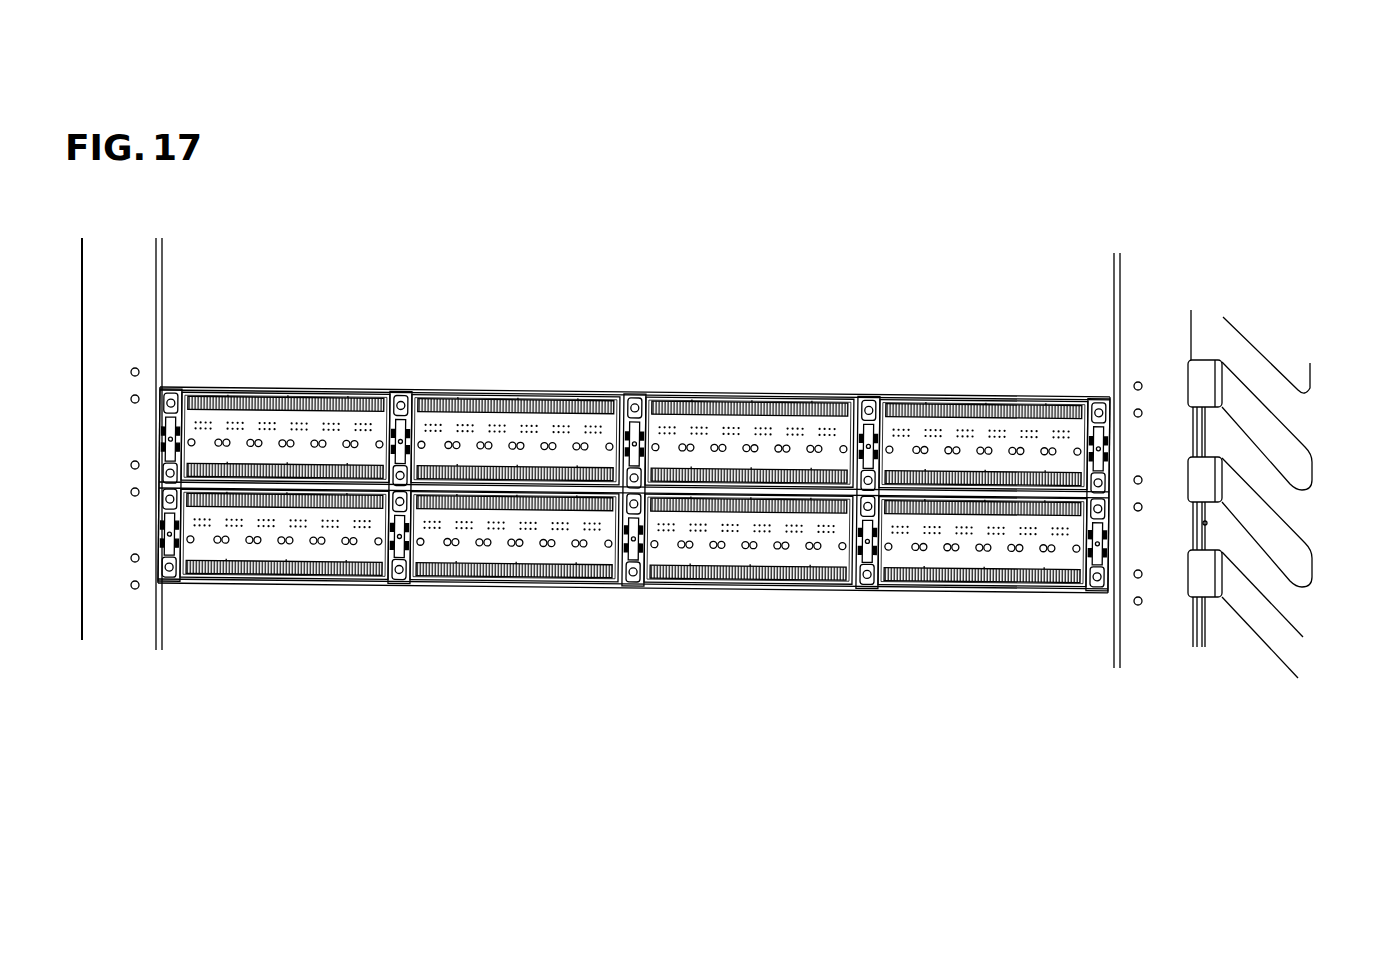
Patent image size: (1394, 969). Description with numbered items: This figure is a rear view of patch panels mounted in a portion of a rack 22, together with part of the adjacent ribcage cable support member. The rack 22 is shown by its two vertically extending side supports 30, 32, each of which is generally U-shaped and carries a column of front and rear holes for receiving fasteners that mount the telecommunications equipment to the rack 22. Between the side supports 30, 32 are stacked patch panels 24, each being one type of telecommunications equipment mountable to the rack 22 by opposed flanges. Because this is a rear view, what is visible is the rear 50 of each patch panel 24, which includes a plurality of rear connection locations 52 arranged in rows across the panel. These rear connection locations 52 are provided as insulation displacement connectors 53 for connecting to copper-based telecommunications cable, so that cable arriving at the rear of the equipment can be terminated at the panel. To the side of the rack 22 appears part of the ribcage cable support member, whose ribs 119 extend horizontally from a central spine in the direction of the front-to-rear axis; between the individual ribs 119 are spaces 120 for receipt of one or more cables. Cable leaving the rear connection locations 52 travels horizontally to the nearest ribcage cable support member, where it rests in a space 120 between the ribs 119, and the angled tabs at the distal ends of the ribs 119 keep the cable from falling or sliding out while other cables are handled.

The rack 22 is at (83, 292).
The side support 30 is at (163, 272).
The side support 32 is at (1115, 301).
The patch panel 24 is at (663, 393).
The rear 50 is at (458, 420).
The rear connection location 52 is at (210, 397).
The insulation displacement connector 53 is at (1047, 408).
The rib 119 is at (1265, 403).
The space 120 is at (1283, 492).